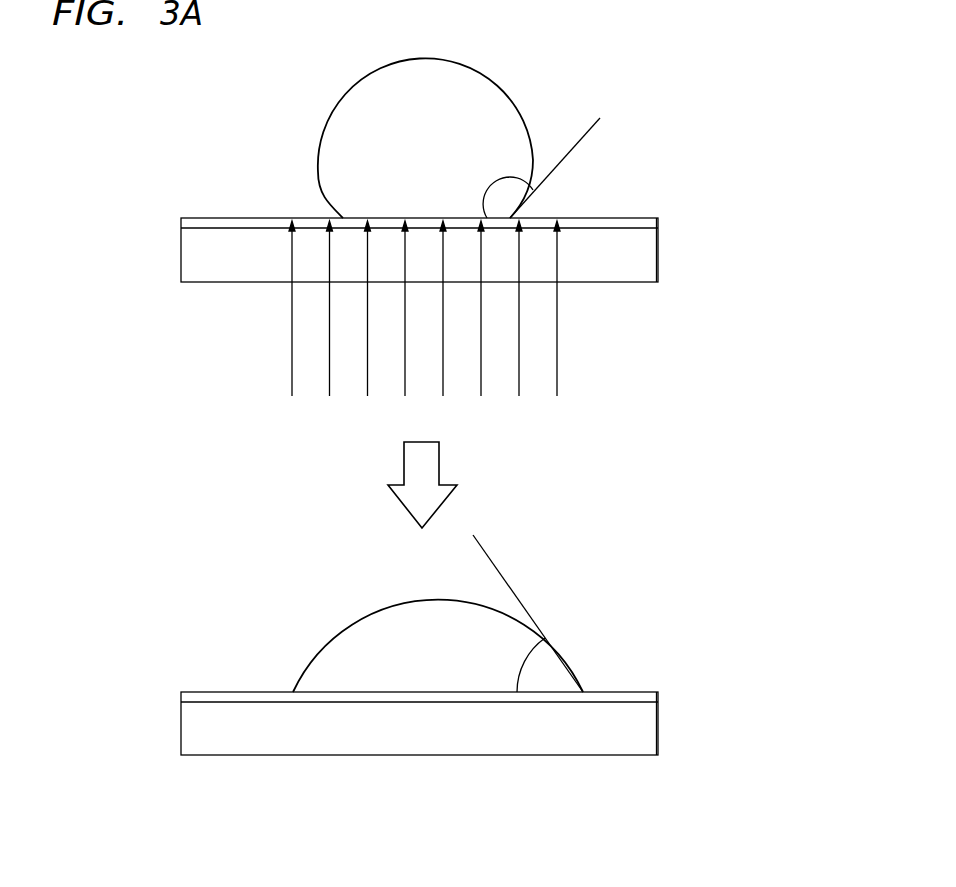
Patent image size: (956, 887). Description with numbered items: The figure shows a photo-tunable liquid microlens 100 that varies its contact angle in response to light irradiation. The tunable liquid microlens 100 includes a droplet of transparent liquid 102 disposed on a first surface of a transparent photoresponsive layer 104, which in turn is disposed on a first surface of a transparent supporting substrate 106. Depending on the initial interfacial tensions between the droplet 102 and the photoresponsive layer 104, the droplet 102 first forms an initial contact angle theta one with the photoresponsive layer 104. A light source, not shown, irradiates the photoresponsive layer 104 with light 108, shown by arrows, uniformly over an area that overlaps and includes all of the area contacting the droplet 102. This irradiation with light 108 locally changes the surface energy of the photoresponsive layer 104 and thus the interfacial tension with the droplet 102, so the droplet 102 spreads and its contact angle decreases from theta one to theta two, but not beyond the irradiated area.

The tunable liquid microlens 100 is at (442, 400).
The droplet of transparent liquid 102 is at (487, 90).
The photoresponsive layer 104 is at (648, 223).
The supporting substrate 106 is at (646, 264).
The light 108 is at (585, 352).